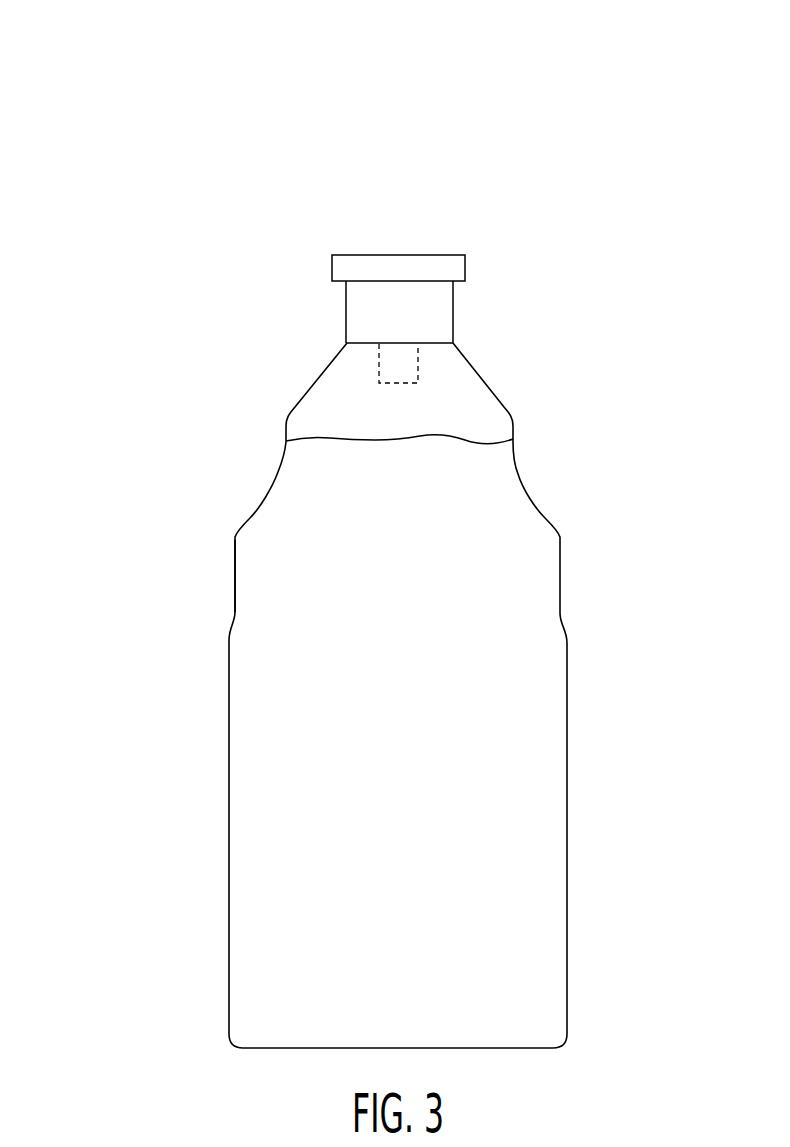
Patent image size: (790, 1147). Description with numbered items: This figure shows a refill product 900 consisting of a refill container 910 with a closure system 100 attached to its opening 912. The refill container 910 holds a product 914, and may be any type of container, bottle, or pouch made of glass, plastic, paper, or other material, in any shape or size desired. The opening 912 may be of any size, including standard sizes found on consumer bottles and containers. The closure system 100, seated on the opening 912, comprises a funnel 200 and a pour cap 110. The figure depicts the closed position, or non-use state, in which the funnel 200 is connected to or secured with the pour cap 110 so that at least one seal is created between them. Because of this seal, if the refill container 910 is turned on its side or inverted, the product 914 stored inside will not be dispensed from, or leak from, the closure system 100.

The refill product 900 is at (555, 205).
The closure system 100 is at (306, 251).
The funnel 200 is at (452, 271).
The pour cap 110 is at (435, 320).
The refill container 910 is at (500, 403).
The opening 912 is at (322, 353).
The product 914 is at (348, 598).